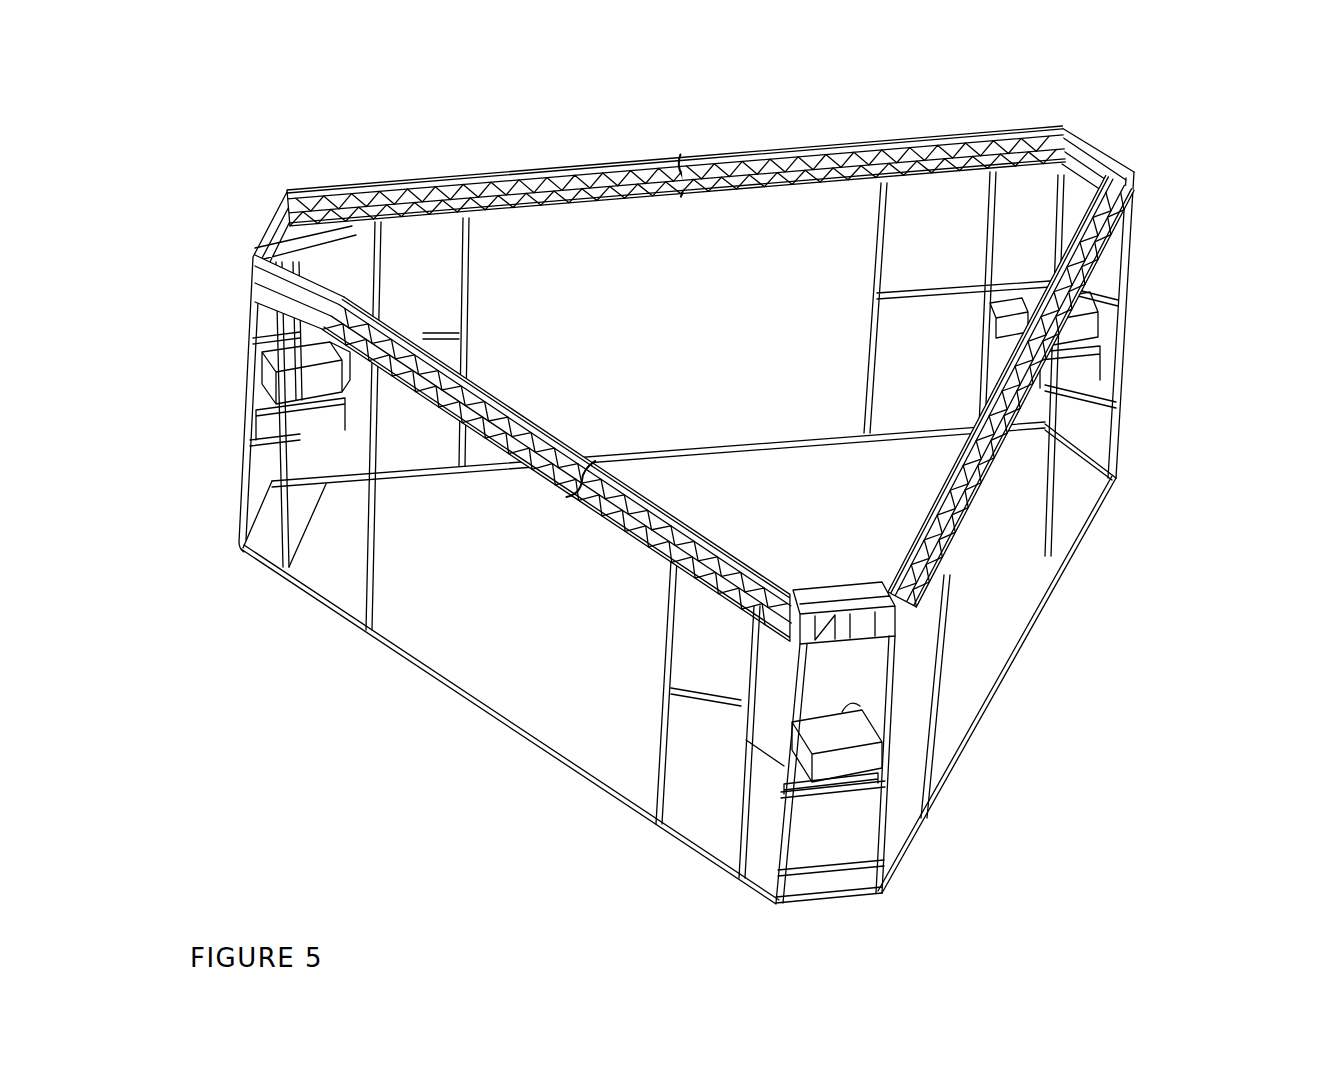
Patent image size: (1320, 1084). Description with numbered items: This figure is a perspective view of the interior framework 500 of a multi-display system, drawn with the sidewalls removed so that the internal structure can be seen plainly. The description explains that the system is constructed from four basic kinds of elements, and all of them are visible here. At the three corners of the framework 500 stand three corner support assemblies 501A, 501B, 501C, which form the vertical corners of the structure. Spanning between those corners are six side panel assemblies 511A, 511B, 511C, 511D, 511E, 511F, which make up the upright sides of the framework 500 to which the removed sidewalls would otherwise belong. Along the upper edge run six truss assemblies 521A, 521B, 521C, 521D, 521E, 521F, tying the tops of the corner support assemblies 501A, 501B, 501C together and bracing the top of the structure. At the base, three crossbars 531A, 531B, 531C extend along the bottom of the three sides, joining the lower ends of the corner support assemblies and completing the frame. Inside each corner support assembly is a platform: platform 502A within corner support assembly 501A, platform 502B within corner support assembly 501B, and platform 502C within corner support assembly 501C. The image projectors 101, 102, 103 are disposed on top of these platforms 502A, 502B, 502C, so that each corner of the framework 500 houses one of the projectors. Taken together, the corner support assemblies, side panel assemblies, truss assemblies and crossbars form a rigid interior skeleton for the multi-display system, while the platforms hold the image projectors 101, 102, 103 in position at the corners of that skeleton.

The interior framework 500 is at (1236, 701).
The corner support assembly 501A is at (238, 556).
The corner support assembly 501B is at (828, 908).
The corner support assembly 501C is at (1104, 472).
The platform 502A is at (258, 437).
The platform 502B is at (878, 780).
The platform 502C is at (1090, 376).
The side panel assembly 511A is at (307, 598).
The side panel assembly 511B is at (683, 850).
The side panel assembly 511C is at (920, 830).
The side panel assembly 511D is at (1077, 538).
The side panel assembly 511E is at (869, 272).
The side panel assembly 511F is at (466, 265).
The truss assembly 521A is at (557, 170).
The truss assembly 521B is at (745, 152).
The truss assembly 521C is at (489, 384).
The truss assembly 521D is at (684, 514).
The truss assembly 521E is at (922, 509).
The truss assembly 521F is at (1108, 235).
The crossbar 531A is at (482, 718).
The crossbar 531B is at (683, 443).
The crossbar 531C is at (1018, 653).
The image projector 101 is at (1090, 318).
The image projector 102 is at (852, 745).
The image projector 103 is at (272, 386).